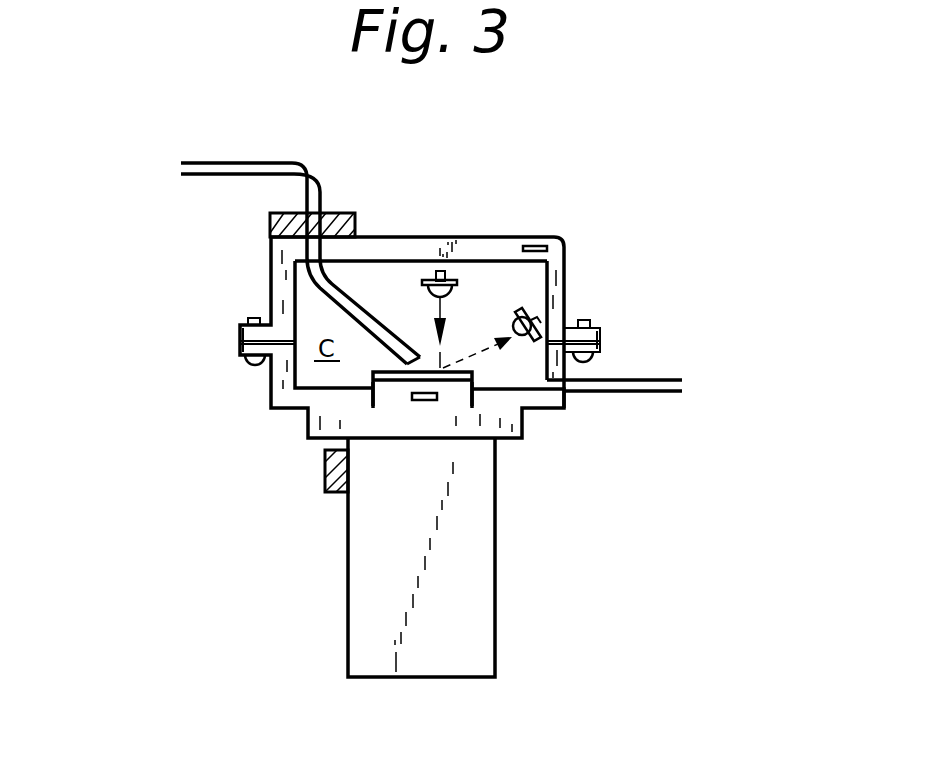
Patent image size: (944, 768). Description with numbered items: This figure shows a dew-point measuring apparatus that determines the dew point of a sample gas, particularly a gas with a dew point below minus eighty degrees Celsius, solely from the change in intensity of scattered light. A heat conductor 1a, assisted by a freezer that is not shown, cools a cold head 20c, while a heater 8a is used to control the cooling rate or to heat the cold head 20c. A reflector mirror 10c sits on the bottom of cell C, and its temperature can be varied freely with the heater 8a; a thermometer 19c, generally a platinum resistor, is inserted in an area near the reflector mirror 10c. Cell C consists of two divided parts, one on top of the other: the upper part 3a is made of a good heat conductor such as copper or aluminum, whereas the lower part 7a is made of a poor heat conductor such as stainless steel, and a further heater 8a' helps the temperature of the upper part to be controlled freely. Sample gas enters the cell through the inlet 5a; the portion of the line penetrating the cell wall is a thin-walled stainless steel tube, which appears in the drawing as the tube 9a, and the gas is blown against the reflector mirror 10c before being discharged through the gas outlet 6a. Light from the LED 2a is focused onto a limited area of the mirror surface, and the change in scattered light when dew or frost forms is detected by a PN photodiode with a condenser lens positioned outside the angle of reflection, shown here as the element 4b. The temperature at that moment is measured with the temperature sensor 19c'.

The heat conductor 1a is at (466, 575).
The light-emitting diode 2a is at (456, 281).
The upper part of cell 3a is at (405, 250).
The sensor 4b is at (526, 312).
The inlet 5a is at (160, 168).
The gas outlet 6a is at (698, 385).
The lower part of cell 7a is at (278, 375).
The heater 8a is at (297, 473).
The heater 8a' is at (320, 181).
The gas supply tube 9a is at (335, 300).
The reflector mirror 10c is at (395, 381).
The thermometer 19c is at (382, 494).
The temperature sensor 19c' is at (600, 218).
The cold head 20c is at (437, 403).